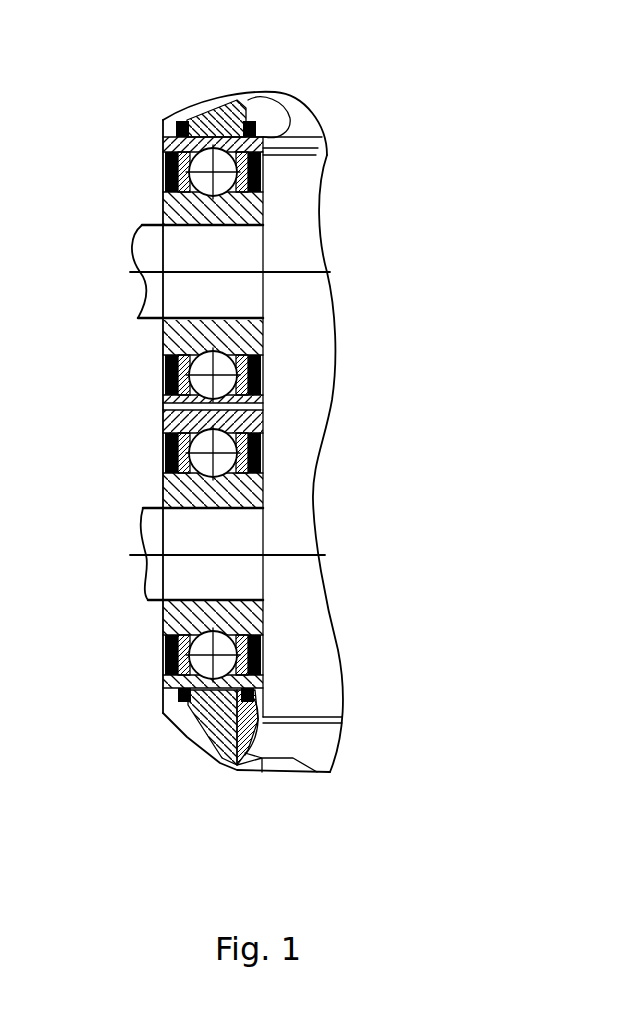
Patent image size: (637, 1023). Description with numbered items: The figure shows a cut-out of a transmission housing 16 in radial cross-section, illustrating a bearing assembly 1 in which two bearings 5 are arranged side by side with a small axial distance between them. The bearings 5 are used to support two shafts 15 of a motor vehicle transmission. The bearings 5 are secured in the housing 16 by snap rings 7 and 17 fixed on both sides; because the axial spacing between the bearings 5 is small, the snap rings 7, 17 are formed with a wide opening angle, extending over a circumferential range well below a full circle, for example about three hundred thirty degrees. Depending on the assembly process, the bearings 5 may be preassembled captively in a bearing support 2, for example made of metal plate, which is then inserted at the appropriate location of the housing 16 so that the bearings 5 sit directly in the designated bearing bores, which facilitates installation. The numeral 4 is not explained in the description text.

The bearing assembly 1 is at (296, 433).
The bearing support 2 is at (248, 104).
The housing 4 is at (333, 272).
The bearings 5 is at (130, 203).
The snap ring 7 is at (270, 128).
The shafts 15 is at (197, 412).
The housing 16 is at (228, 120).
The snap ring 17 is at (180, 128).